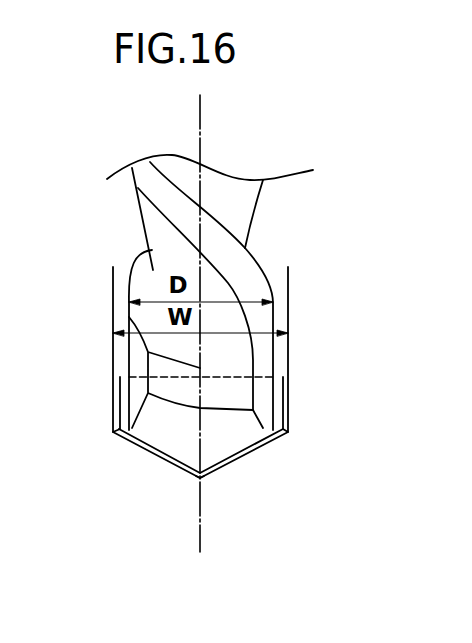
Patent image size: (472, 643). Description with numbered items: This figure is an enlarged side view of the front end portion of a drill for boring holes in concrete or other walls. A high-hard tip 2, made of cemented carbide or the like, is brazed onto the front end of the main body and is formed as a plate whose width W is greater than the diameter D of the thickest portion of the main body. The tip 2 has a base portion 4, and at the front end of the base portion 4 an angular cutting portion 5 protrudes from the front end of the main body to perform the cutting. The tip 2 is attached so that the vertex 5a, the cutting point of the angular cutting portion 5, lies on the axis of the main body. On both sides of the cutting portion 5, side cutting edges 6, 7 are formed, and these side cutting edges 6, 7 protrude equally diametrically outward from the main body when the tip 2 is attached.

The high-hard tip 2 is at (172, 464).
The base portion 4 is at (235, 383).
The angular cutting portion 5 is at (230, 466).
The vertex 5a is at (203, 481).
The side cutting edge 6 is at (112, 403).
The side cutting edge 7 is at (290, 403).